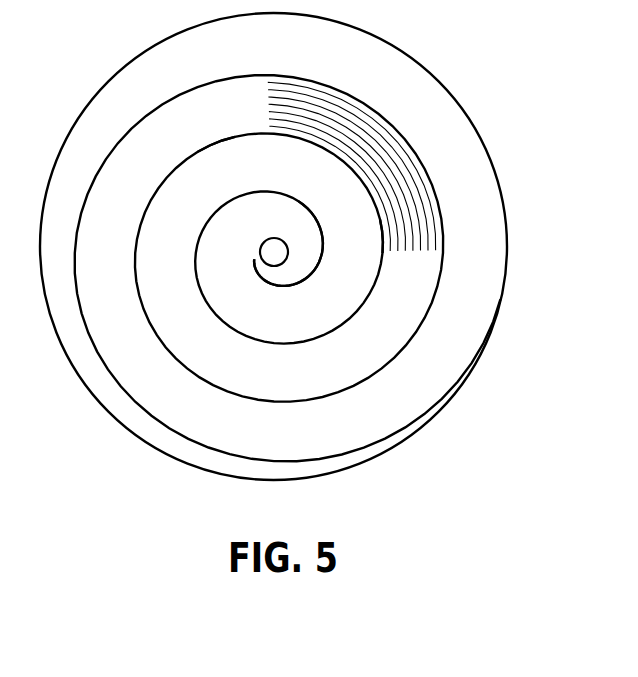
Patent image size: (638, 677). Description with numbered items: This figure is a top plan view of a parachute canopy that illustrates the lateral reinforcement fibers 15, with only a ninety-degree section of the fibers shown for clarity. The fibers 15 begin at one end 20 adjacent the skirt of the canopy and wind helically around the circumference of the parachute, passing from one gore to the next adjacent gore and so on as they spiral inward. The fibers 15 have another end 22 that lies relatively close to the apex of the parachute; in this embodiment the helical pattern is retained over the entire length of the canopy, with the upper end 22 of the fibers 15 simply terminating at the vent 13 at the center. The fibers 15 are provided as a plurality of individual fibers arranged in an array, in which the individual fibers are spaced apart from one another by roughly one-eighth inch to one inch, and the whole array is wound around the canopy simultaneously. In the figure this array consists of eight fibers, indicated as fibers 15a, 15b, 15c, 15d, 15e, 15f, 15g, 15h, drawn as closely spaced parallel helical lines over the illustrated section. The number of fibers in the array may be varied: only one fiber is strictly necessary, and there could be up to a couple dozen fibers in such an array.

The vent 13 is at (276, 251).
The fibers 15 is at (195, 450).
The fiber 15a is at (218, 142).
The fiber 15b is at (384, 240).
The fiber 15c is at (278, 116).
The fiber 15d is at (404, 234).
The fiber 15e is at (286, 103).
The fiber 15f is at (304, 100).
The fiber 15g is at (413, 170).
The fiber 15h is at (432, 197).
The end 20 is at (506, 289).
The end 22 is at (260, 244).